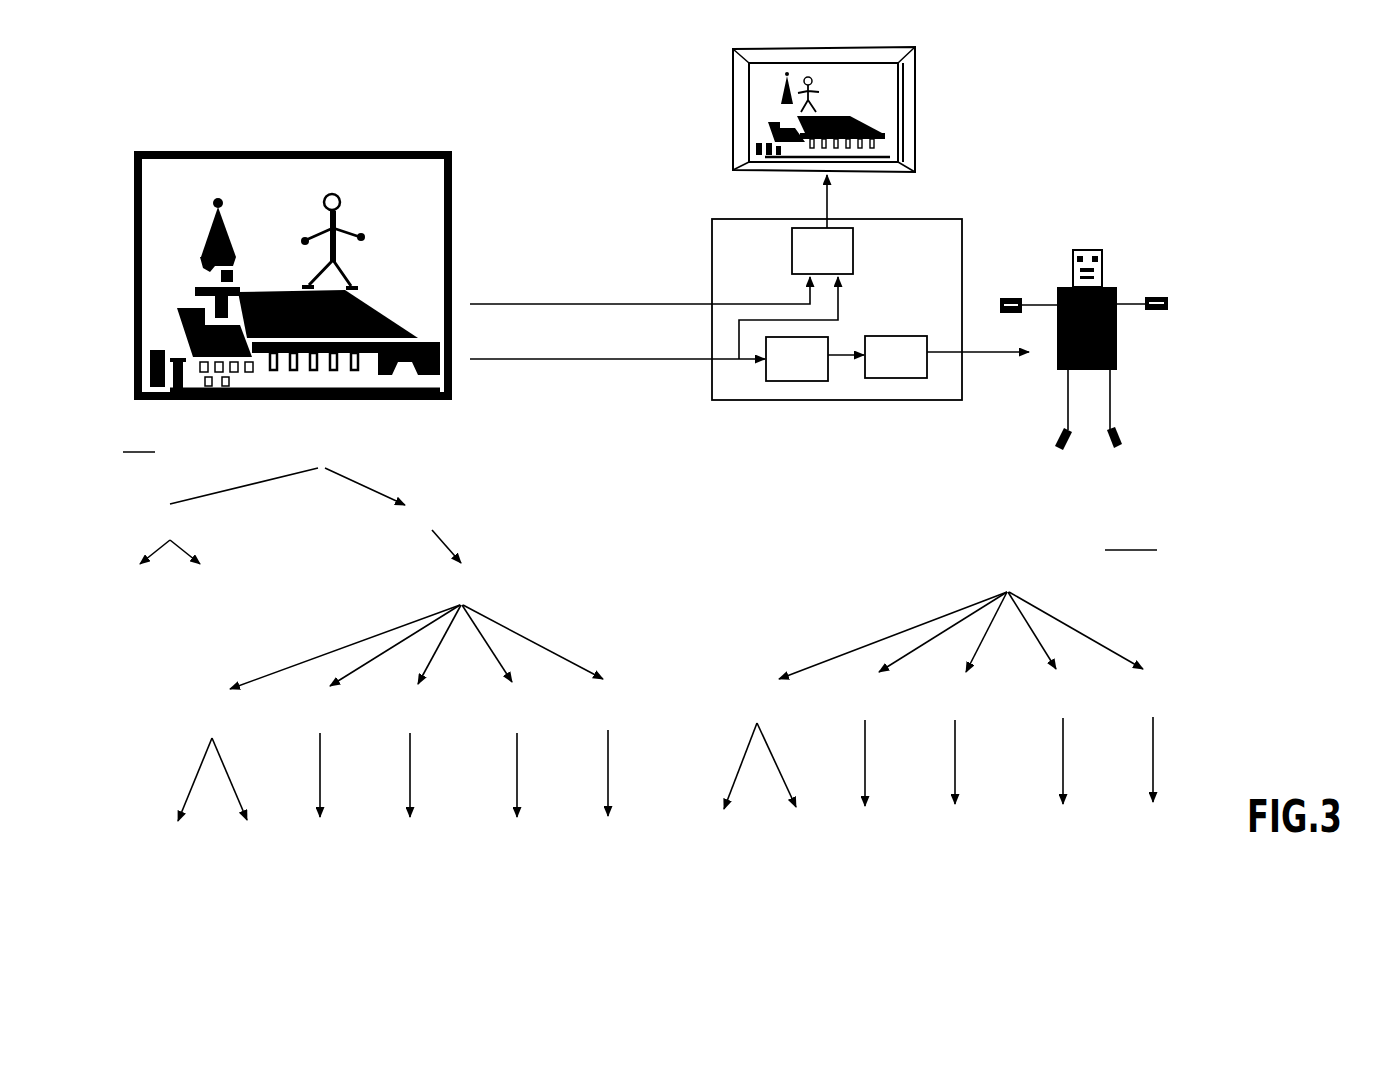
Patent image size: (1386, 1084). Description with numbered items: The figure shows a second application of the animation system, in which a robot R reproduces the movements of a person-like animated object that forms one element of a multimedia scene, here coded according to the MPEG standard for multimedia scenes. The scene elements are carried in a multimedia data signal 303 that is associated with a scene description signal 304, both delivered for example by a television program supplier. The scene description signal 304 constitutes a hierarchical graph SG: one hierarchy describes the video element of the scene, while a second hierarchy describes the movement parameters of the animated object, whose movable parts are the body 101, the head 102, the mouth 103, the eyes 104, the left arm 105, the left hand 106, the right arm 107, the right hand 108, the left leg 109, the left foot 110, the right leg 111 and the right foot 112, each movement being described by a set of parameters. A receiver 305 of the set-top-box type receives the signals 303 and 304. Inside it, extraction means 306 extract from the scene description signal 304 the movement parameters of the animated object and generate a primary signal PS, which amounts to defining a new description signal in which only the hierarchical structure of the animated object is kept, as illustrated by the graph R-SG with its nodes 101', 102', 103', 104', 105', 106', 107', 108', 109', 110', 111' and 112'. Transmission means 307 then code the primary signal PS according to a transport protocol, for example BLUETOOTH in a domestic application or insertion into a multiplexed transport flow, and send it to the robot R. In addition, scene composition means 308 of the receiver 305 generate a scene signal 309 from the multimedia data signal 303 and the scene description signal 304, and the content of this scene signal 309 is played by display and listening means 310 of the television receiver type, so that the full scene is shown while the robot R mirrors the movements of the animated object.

The multimedia data signal 303 is at (576, 304).
The scene description signal 304 is at (579, 359).
The receiver 305 is at (712, 235).
The extraction means 306 is at (781, 383).
The transmission means 307 is at (896, 379).
The scene composition means 308 is at (857, 256).
The scene signal 309 is at (829, 198).
The display and listening means 310 is at (733, 98).
The primary signal PS is at (1008, 360).
The robot R is at (1158, 203).
The hierarchical structure graph SG is at (139, 439).
The robot hierarchical graph R-SG is at (1131, 537).
The body 101 is at (416, 632).
The head 102 is at (212, 762).
The mouth 103 is at (176, 842).
The eyes 104 is at (249, 842).
The left arm 105 is at (316, 758).
The left hand 106 is at (319, 842).
The right arm 107 is at (408, 757).
The right hand 108 is at (411, 842).
The left leg 109 is at (513, 756).
The left foot 110 is at (514, 842).
The right leg 111 is at (608, 756).
The right foot 112 is at (609, 837).
The body node of robot graph 101' is at (961, 619).
The head node of robot graph 102' is at (760, 750).
The mouth node of robot graph 103' is at (725, 832).
The eyes node of robot graph 104' is at (800, 827).
The left arm node of robot graph 105' is at (866, 747).
The left hand node of robot graph 106' is at (867, 825).
The right arm node of robot graph 107' is at (960, 745).
The right hand node of robot graph 108' is at (961, 824).
The left leg node of robot graph 109' is at (1065, 744).
The left foot node of robot graph 110' is at (1067, 822).
The right leg node of robot graph 111' is at (1158, 742).
The right foot node of robot graph 112' is at (1160, 822).